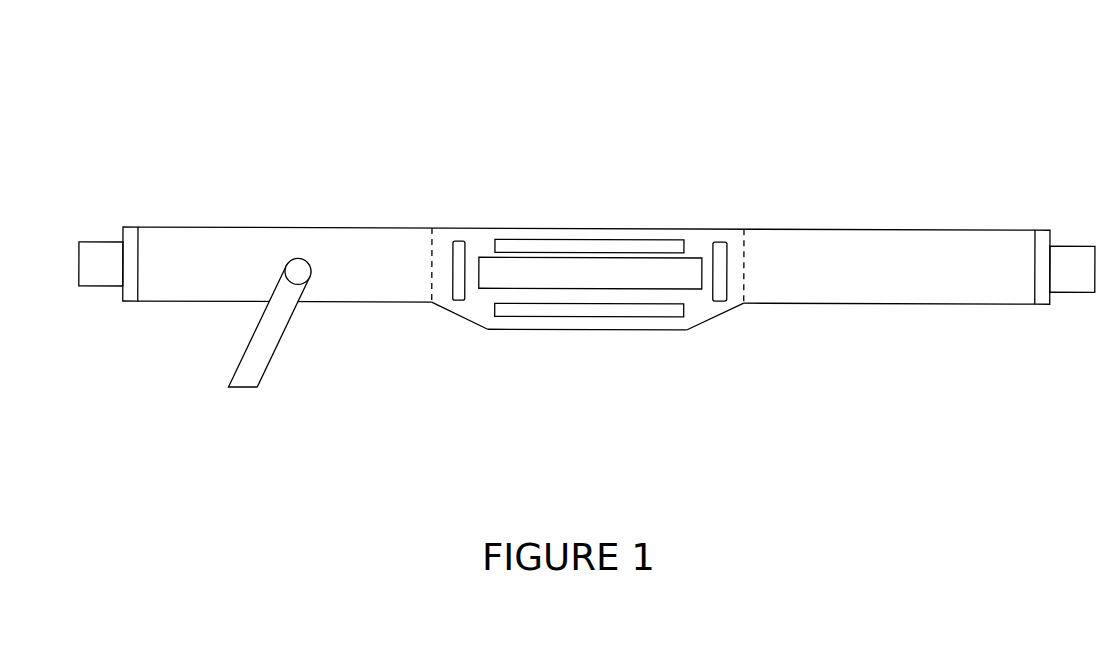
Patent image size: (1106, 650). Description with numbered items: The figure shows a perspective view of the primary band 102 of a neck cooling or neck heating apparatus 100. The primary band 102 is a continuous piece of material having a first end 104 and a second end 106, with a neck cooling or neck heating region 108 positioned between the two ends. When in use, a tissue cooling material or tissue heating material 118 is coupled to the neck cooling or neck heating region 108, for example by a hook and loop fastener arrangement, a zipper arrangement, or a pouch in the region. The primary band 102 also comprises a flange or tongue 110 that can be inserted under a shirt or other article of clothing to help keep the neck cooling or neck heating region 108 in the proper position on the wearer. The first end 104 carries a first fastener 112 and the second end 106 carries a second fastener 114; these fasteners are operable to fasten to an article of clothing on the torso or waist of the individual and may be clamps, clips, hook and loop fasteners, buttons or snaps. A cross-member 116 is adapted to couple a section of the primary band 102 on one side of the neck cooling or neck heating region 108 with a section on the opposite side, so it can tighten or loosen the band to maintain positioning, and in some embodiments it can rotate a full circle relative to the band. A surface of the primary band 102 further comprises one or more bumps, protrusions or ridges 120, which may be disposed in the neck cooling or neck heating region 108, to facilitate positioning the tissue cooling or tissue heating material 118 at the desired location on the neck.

The neck cooling or neck heating apparatus 100 is at (254, 98).
The primary band 102 is at (353, 240).
The first end 104 is at (123, 302).
The second end 106 is at (1052, 305).
The neck cooling or neck heating region 108 is at (673, 327).
The flange or tongue 110 is at (553, 329).
The first fastener 112 is at (114, 276).
The second fastener 114 is at (1088, 274).
The cross-member 116 is at (267, 348).
The tissue cooling material or tissue heating material 118 is at (541, 280).
The bumps, protrusions or ridges 120 is at (462, 240).